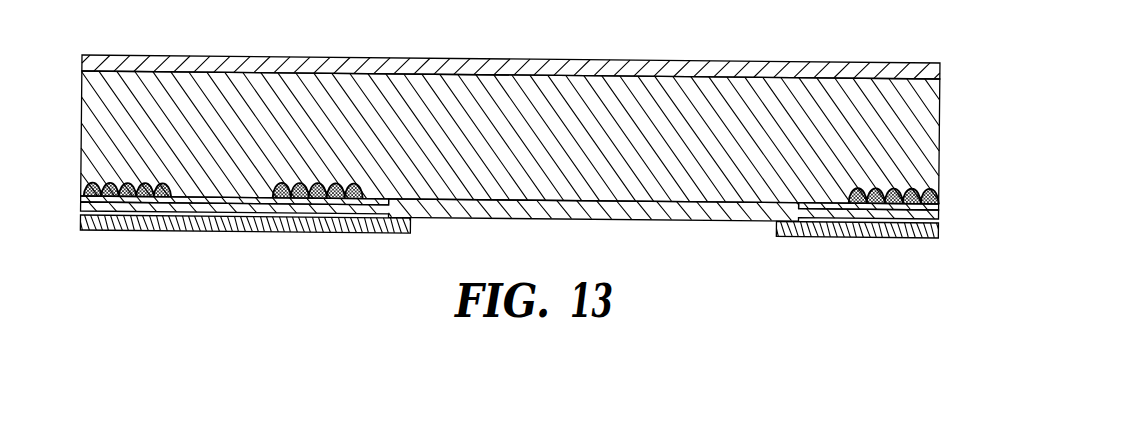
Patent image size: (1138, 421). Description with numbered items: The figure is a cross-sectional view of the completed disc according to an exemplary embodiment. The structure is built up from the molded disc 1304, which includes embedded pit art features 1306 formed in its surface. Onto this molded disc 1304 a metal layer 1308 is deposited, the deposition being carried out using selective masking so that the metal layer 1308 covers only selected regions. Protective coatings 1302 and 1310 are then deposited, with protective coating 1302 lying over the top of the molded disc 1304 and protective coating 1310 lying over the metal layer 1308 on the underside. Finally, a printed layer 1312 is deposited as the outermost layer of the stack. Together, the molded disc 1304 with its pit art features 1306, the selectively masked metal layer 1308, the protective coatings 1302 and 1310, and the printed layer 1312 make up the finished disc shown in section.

The protective coating 1302 is at (942, 73).
The molded disc 1304 is at (920, 112).
The embedded pit art features 1306 is at (931, 193).
The metal layer 1308 is at (940, 211).
The protective coating 1310 is at (941, 218).
The printed layer 1312 is at (941, 237).